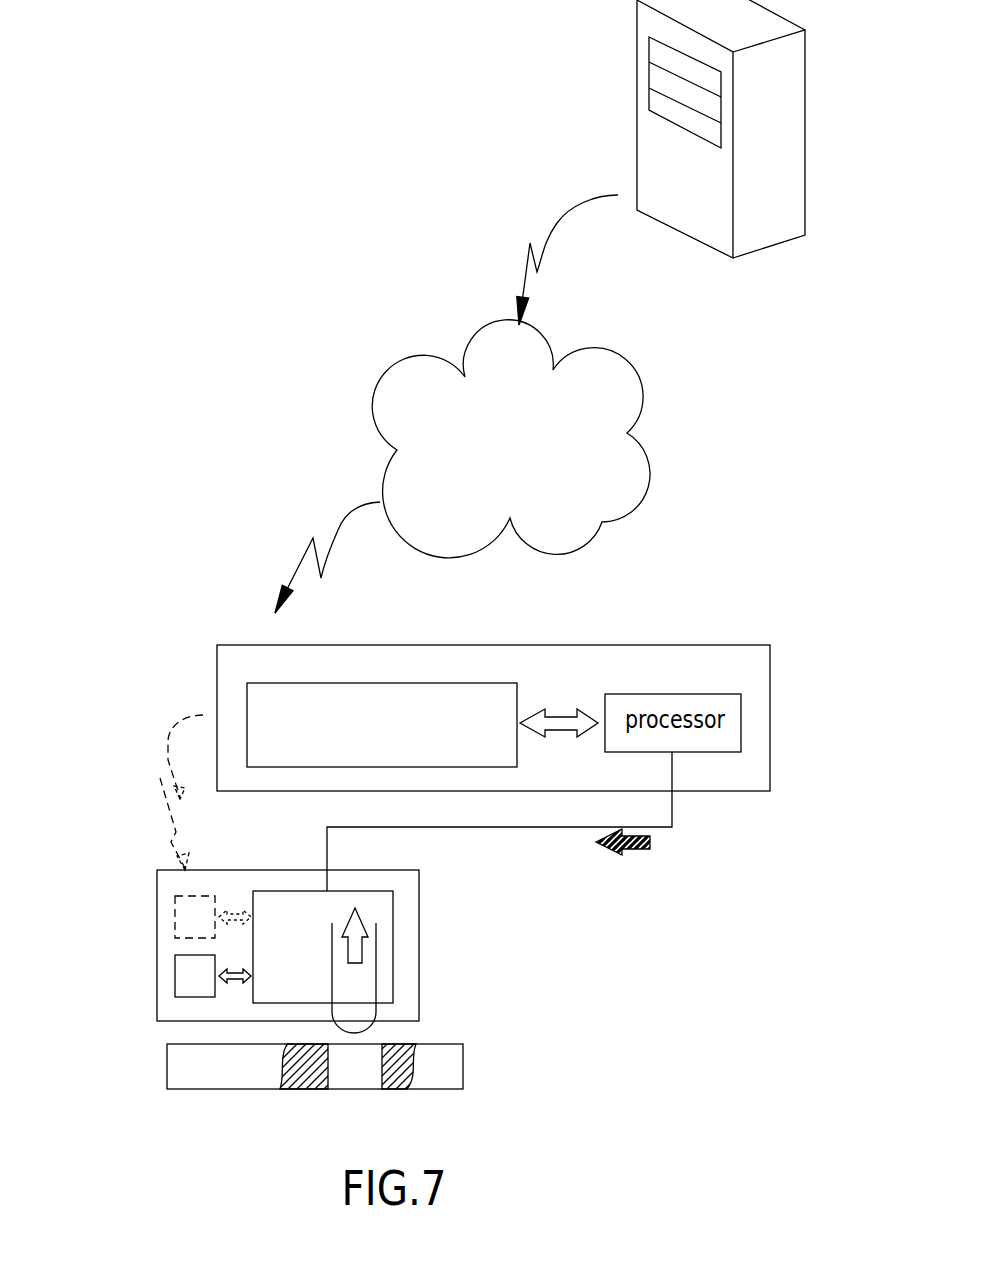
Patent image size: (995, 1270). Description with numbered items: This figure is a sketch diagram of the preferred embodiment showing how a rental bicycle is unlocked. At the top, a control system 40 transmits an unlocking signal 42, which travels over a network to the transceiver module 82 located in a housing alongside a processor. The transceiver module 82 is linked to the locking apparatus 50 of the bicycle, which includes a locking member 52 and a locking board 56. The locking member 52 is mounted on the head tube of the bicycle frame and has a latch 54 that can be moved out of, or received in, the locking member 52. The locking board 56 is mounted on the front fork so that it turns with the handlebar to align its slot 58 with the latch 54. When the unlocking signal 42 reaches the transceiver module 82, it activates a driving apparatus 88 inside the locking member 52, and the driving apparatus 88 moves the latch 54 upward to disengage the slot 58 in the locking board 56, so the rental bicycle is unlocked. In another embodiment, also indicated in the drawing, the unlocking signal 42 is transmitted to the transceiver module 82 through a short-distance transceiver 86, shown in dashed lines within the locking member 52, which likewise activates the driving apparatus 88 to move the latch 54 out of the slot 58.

The control system 40 is at (637, 127).
The unlocking signal 42 is at (556, 222).
The locking apparatus 50 is at (289, 969).
The locking member 52 is at (413, 945).
The latch 54 is at (369, 988).
The locking board 56 is at (197, 1078).
The slot 58 is at (378, 1068).
The transceiver module 82 is at (463, 690).
The short-distance transceiver 86 is at (182, 912).
The driving apparatus 88 is at (378, 897).